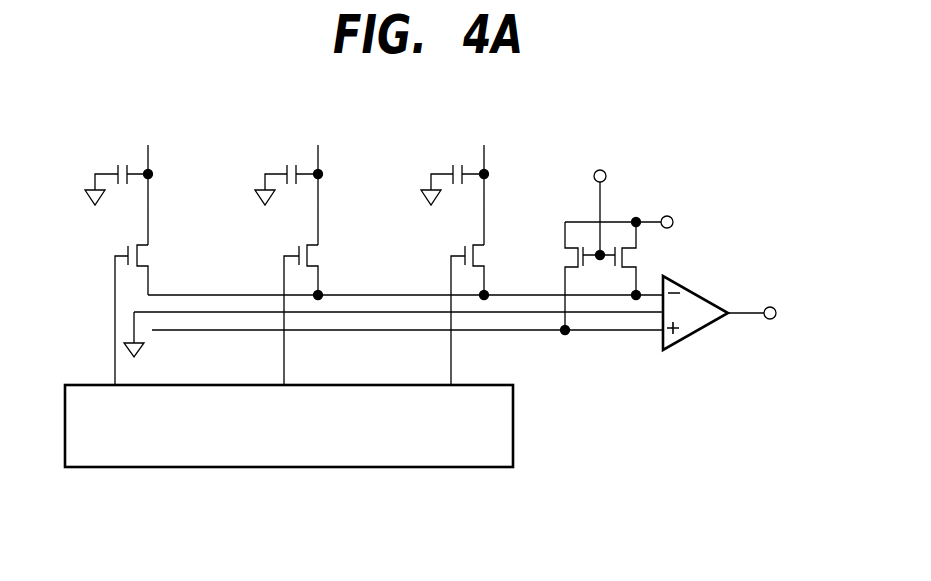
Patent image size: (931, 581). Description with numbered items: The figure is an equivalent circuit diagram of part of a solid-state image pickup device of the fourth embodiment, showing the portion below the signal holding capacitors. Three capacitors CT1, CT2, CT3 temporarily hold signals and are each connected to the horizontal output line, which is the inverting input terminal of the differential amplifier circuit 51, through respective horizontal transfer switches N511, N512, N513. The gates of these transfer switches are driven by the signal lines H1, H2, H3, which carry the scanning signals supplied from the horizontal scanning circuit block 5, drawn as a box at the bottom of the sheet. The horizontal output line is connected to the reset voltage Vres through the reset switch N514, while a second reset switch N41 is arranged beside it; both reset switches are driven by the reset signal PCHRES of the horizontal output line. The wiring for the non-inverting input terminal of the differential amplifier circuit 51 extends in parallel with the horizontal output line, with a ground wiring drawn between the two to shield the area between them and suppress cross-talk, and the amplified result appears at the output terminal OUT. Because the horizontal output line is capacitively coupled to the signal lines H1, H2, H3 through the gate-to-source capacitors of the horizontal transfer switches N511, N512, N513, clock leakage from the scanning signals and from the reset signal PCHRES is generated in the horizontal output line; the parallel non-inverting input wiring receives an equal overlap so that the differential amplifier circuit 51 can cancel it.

The horizontal scanning circuit block 5 is at (513, 403).
The differential amplifier circuit 51 is at (698, 332).
The signal holding capacitor CT1 is at (119, 187).
The signal holding capacitor CT2 is at (289, 188).
The signal holding capacitor CT3 is at (455, 188).
The horizontal transfer switch N511 is at (120, 300).
The horizontal transfer switch N512 is at (291, 301).
The horizontal transfer switch N513 is at (458, 301).
The reset switch N41 is at (552, 278).
The reset switch N514 is at (652, 261).
The reset signal PCHRES is at (600, 199).
The reset voltage Vres is at (643, 223).
The output terminal OUT is at (778, 311).
The signal line H1 is at (113, 403).
The signal line H2 is at (285, 403).
The signal line H3 is at (451, 403).